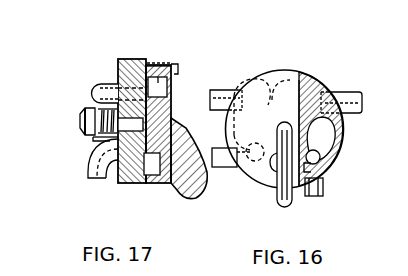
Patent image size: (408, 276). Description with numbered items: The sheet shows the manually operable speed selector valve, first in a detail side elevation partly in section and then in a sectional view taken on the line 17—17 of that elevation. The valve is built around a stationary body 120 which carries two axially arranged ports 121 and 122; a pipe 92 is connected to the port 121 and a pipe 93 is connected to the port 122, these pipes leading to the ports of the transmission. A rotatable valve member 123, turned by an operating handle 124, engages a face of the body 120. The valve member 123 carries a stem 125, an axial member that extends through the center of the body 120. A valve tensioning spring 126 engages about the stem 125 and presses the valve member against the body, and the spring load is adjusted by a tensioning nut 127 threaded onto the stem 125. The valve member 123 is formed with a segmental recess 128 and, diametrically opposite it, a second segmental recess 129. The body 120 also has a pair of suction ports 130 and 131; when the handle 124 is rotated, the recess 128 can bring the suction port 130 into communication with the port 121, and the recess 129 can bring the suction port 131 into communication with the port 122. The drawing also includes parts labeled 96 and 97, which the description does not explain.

In FIG. 16, the section line 17— 17 is at (285, 63).
In FIG. 16, the pipe 92 is at (227, 167).
In FIG. 17, the pipe 93 is at (100, 88).
In FIG. 16, the pipe 93 is at (345, 96).
In FIG. 16, the arm 96 is at (230, 97).
In FIG. 17, the elbow fitting 97 is at (100, 176).
In FIG. 16, the elbow fitting 97 is at (324, 186).
In FIG. 17, the stationary body 120 is at (127, 185).
In FIG. 16, the port 121 is at (228, 138).
In FIG. 16, the port 122 is at (320, 96).
In FIG. 17, the rotatable valve member 123 is at (172, 100).
In FIG. 17, the operating handle 124 is at (181, 198).
In FIG. 17, the stem 125 is at (82, 122).
In FIG. 17, the valve tensioning spring 126 is at (105, 143).
In FIG. 17, the tensioning nut 127 is at (86, 137).
In FIG. 17, the segmental recess 128 is at (170, 55).
In FIG. 16, the segmental recess 128 is at (264, 85).
In FIG. 17, the second segmental recess 129 is at (151, 170).
In FIG. 16, the second segmental recess 129 is at (325, 131).
In FIG. 16, the suction port 130 is at (257, 85).
In FIG. 16, the suction port 131 is at (322, 159).